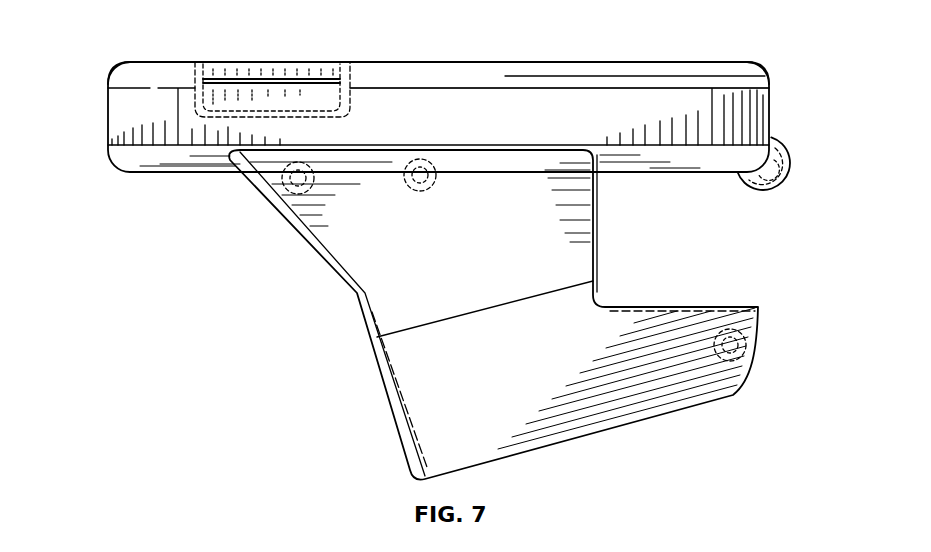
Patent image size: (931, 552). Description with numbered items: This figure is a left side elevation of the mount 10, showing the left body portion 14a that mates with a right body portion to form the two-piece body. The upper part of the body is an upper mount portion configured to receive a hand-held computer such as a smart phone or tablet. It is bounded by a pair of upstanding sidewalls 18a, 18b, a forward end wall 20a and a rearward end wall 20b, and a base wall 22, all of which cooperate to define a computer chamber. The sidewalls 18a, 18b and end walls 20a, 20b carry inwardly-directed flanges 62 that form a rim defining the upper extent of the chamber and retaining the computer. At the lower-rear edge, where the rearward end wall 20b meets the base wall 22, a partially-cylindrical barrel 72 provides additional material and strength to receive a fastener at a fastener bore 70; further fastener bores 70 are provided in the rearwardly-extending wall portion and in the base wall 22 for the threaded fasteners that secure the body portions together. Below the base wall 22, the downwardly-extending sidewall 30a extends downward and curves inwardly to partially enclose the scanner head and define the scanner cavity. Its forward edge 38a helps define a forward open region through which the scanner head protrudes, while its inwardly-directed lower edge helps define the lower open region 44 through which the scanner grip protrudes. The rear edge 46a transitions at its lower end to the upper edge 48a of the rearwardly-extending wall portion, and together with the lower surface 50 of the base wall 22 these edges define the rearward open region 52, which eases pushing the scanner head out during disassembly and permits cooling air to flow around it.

The mount 10 is at (652, 26).
The left body portion 14a is at (494, 78).
The upstanding sidewall 18a is at (430, 122).
The upstanding sidewall 18b is at (318, 95).
The inwardly-directed flange 62 is at (285, 80).
The forward end wall 20a is at (108, 112).
The rearward end wall 20b is at (770, 105).
The partially-cylindrical barrel 72 is at (790, 150).
The lower surface 50 is at (188, 176).
The base wall 22 is at (218, 162).
The rearward open region 52 is at (511, 315).
The downwardly-extending sidewall 30a is at (462, 290).
The lower open region 44 is at (314, 284).
The forward edge 38a is at (364, 331).
The rear edge 46a is at (598, 235).
The upper edge 48a is at (671, 305).
The fastener bore 70 is at (302, 181).